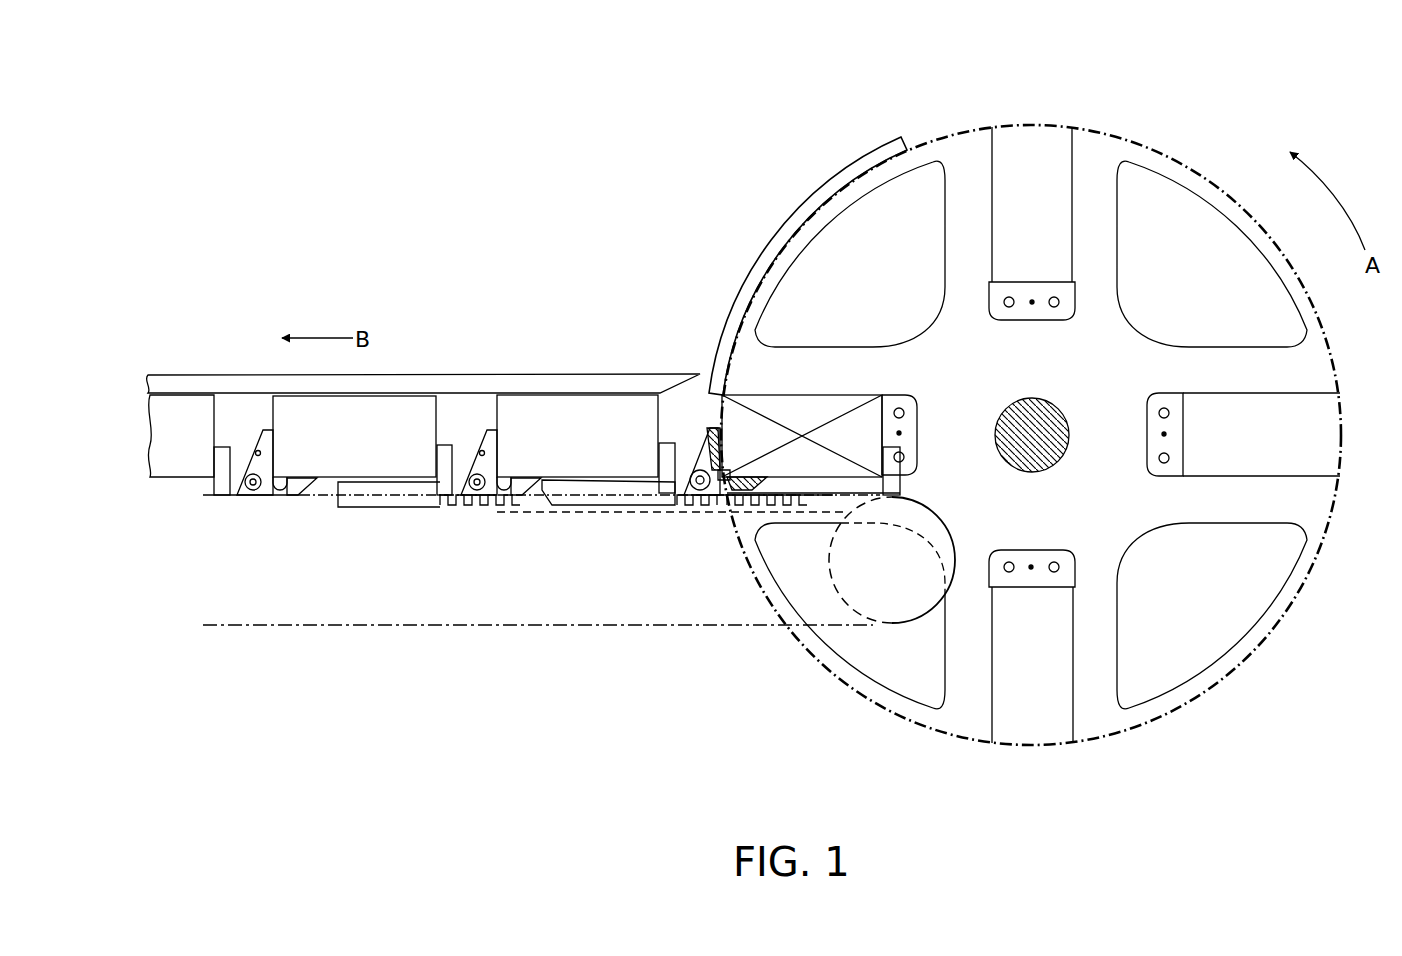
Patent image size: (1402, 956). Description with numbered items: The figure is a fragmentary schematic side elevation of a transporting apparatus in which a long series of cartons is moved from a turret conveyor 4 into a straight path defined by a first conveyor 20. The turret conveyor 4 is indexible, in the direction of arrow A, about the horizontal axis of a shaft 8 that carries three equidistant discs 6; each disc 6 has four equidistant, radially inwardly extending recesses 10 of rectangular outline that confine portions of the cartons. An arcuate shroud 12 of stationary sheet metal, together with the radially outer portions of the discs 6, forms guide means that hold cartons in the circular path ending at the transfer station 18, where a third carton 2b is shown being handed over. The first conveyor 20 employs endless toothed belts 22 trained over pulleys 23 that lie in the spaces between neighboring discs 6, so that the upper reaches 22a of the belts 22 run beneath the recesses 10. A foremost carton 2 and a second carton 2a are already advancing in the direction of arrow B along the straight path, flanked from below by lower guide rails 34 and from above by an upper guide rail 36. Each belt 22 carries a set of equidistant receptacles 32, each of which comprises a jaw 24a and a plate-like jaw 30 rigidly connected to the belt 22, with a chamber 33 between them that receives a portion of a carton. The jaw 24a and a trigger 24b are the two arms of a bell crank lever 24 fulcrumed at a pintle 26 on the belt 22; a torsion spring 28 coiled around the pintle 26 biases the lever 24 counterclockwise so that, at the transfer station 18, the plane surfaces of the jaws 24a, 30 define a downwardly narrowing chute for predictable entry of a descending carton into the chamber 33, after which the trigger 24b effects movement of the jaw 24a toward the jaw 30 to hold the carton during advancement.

The foremost carton 2 is at (364, 448).
The second carton 2a is at (594, 448).
The third carton 2b is at (808, 408).
The second transporting unit or conveyor 4 is at (1220, 125).
The discs 6 is at (1104, 361).
The shaft 8 is at (1058, 447).
The recesses 10 is at (1025, 137).
The arcuate shroud 12 is at (817, 196).
The transfer station 18 is at (770, 667).
The first transporting unit or conveyor 20 is at (460, 308).
The endless flexible elements (belts) 22 is at (456, 513).
The upper reaches of the belts 22a is at (600, 513).
The pulley 23 is at (909, 574).
The bell crank lever 24 is at (270, 497).
The jaw (arm) 24a is at (710, 435).
The trigger (movement effecting means) 24b is at (752, 477).
The pintle 26 is at (700, 506).
The torsion spring 28 is at (703, 473).
The jaw 30 is at (447, 462).
The receptacle 32 is at (797, 507).
The chamber 33 is at (848, 480).
The lower guide rails 34 is at (368, 507).
The upper guide rail 36 is at (197, 383).